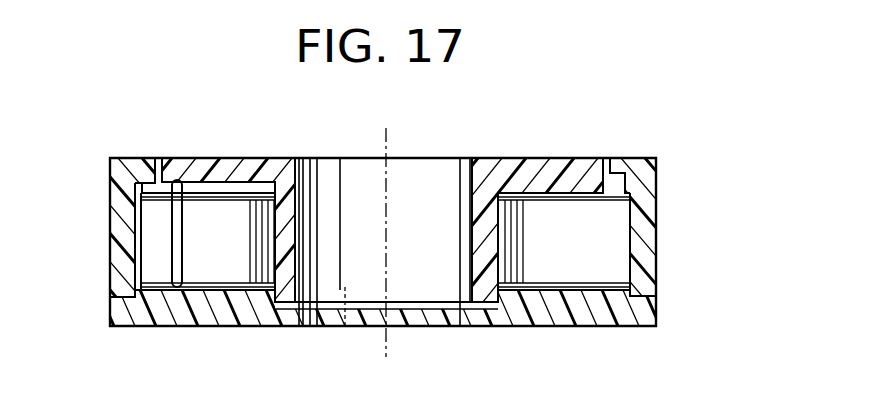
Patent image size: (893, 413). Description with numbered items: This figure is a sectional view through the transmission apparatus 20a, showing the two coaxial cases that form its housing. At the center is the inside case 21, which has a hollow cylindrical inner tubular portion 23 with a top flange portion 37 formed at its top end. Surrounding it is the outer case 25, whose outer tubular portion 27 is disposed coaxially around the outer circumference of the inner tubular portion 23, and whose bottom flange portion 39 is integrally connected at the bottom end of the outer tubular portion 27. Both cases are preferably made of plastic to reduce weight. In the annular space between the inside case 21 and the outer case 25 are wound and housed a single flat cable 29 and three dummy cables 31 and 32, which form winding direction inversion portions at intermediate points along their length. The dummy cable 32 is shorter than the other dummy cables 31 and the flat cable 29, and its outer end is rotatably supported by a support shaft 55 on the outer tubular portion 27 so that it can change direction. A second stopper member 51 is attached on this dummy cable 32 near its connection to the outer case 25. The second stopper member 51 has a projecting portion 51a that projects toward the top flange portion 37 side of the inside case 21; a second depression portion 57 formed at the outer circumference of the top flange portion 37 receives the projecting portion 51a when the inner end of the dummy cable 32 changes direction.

The transmission apparatus 20a is at (135, 150).
The inside case 21 is at (572, 158).
The inner tubular portion 23 is at (289, 235).
The outer case 25 is at (657, 270).
The outer tubular portion 27 is at (647, 181).
The flat cable 29 is at (255, 252).
The dummy cable 31 is at (208, 242).
The dummy cable 32 is at (564, 242).
The top flange portion 37 is at (531, 170).
The bottom flange portion 39 is at (602, 312).
The second stopper member 51 is at (176, 255).
The projecting portion 51a is at (180, 180).
The support shaft 55 is at (140, 250).
The second depression portion 57 is at (207, 190).